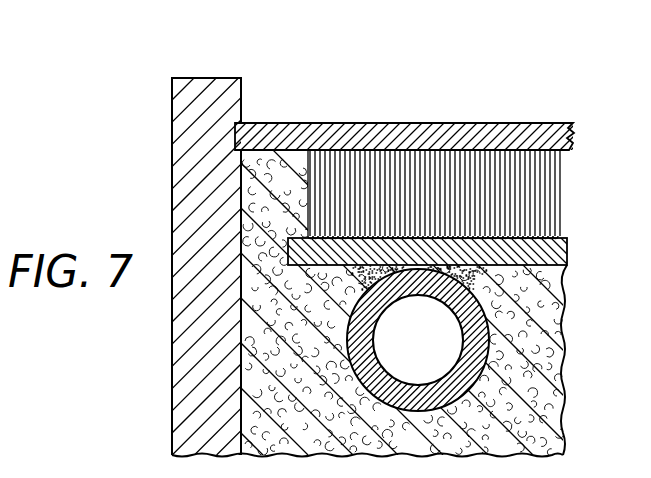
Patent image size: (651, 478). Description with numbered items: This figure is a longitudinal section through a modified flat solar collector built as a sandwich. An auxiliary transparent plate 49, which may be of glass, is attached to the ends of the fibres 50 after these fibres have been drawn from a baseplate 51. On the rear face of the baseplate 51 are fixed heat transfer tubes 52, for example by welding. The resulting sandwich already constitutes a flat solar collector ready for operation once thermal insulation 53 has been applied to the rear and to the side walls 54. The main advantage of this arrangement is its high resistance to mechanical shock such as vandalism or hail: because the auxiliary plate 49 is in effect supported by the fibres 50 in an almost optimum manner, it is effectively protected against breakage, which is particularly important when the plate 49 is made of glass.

The auxiliary transparent plate 49 is at (368, 134).
The fibres 50 is at (543, 190).
The baseplate 51 is at (560, 257).
The heat transfer tubes 52 is at (470, 348).
The thermal insulation 53 is at (560, 354).
The side walls 54 is at (205, 87).